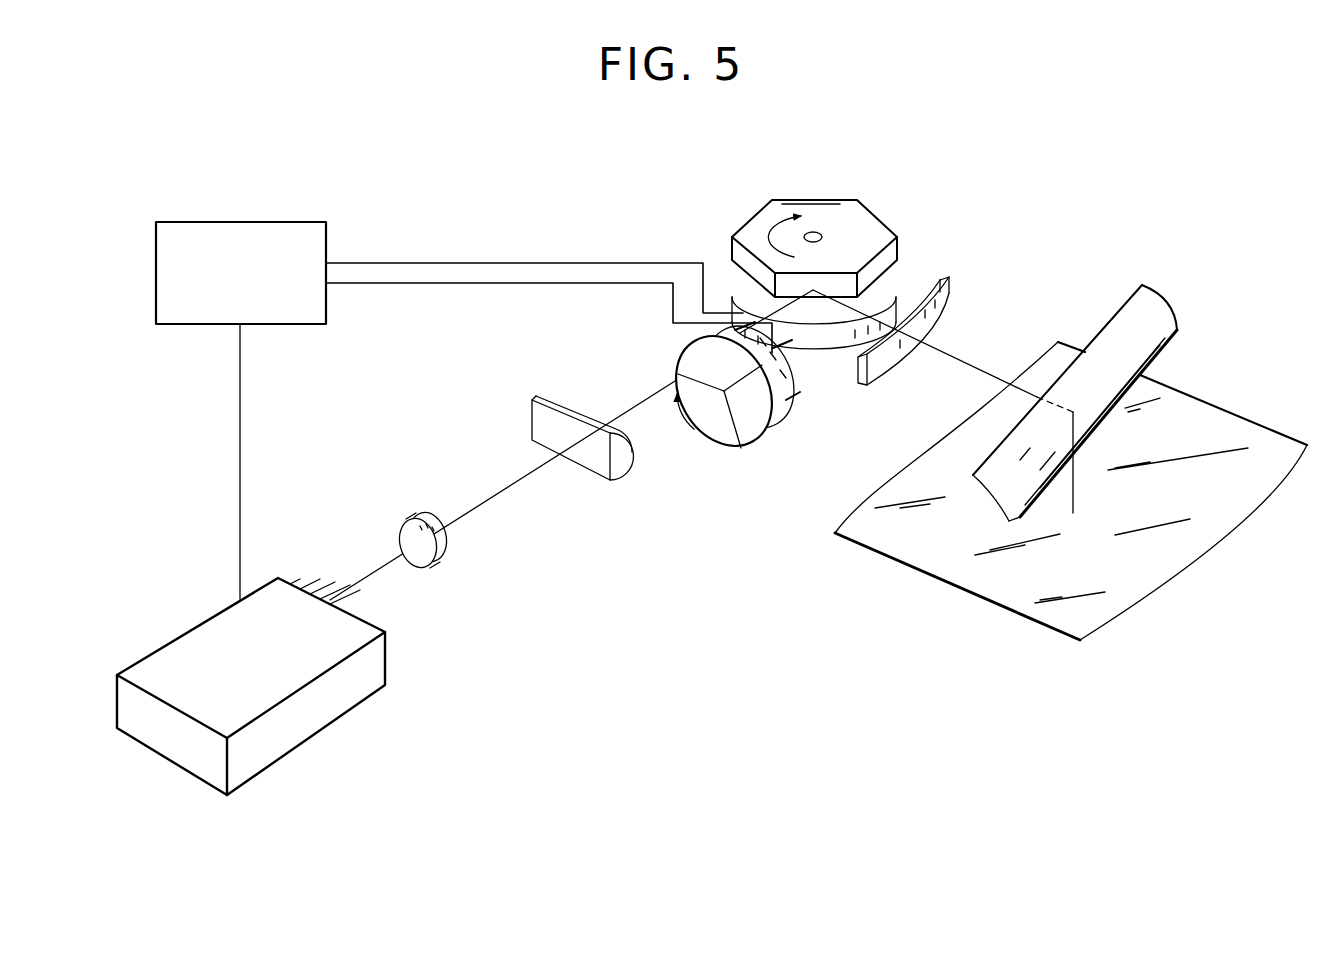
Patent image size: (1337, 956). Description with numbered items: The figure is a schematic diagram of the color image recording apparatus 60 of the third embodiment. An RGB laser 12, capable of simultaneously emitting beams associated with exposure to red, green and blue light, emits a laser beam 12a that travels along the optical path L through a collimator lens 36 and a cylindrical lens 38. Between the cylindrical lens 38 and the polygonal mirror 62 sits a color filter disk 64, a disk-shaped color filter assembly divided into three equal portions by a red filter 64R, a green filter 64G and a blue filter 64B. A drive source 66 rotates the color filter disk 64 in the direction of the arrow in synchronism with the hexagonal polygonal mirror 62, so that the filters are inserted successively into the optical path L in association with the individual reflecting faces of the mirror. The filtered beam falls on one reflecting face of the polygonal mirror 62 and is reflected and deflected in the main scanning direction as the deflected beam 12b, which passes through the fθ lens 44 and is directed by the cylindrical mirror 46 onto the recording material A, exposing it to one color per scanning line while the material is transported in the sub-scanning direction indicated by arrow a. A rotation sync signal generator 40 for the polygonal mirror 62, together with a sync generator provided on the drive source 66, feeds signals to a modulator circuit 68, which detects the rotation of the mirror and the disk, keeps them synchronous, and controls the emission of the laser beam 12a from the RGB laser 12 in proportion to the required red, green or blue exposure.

The RGB laser 12 is at (332, 703).
The laser beam 12a is at (497, 499).
The laser beam (deflected) 12b is at (980, 367).
The collimator lens 36 is at (442, 552).
The cylindrical lens 38 is at (531, 403).
The rotation sync signal generator 40 is at (893, 283).
The fθ lens 44 is at (947, 302).
The cylindrical mirror 46 is at (1160, 309).
The color image recording apparatus 60 is at (788, 585).
The polygonal mirror 62 is at (763, 215).
The color filter disk 64 is at (730, 418).
The red filter 64R is at (690, 358).
The green filter 64G is at (718, 424).
The blue filter 64B is at (762, 418).
The drive source 66 is at (784, 376).
The modulator circuit 68 is at (272, 231).
The optical path L is at (617, 396).
The recording material A is at (1002, 592).
The arrow a is at (938, 602).